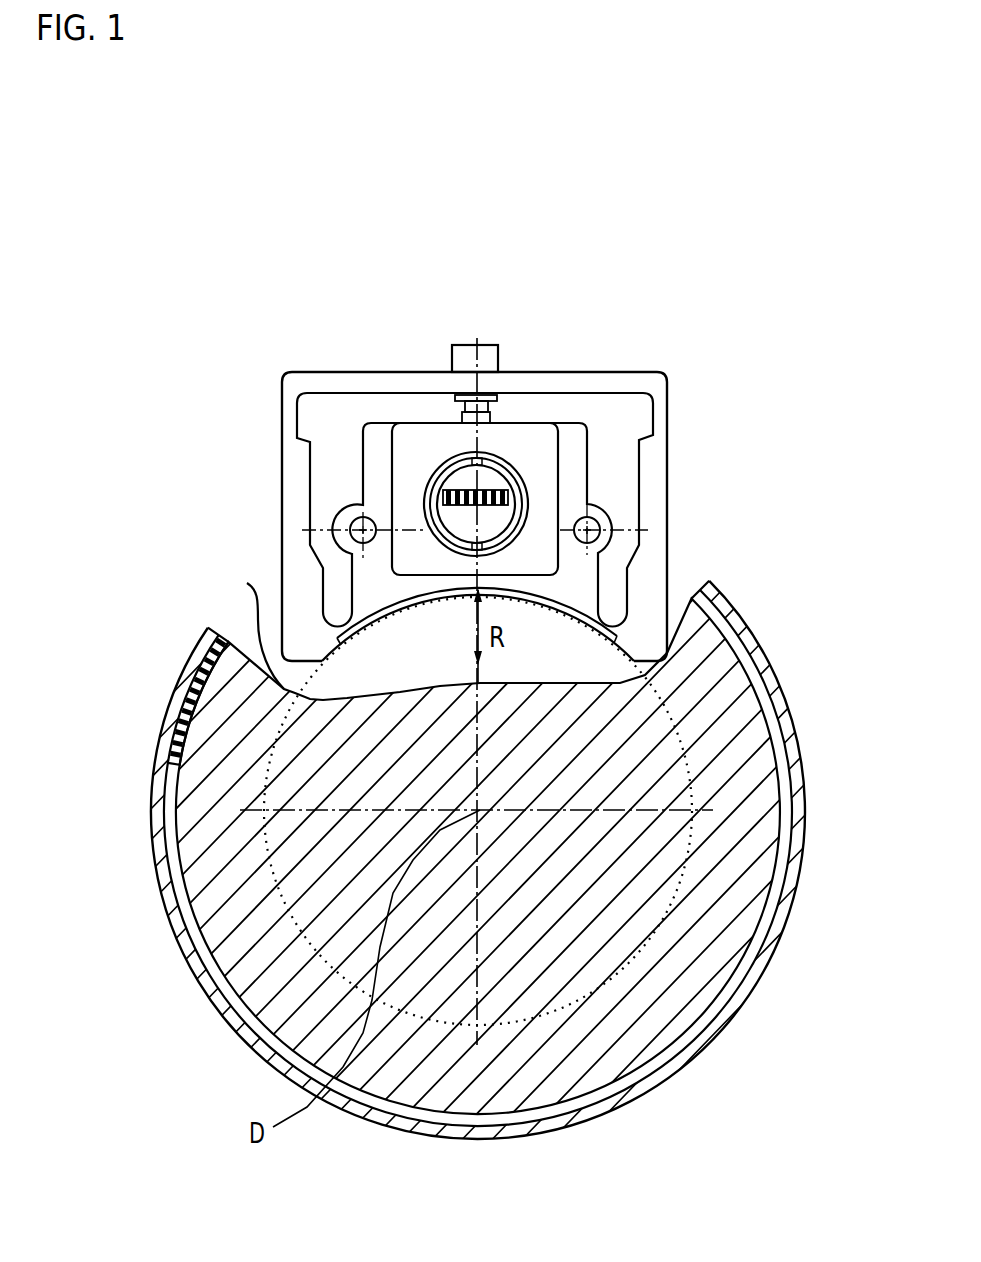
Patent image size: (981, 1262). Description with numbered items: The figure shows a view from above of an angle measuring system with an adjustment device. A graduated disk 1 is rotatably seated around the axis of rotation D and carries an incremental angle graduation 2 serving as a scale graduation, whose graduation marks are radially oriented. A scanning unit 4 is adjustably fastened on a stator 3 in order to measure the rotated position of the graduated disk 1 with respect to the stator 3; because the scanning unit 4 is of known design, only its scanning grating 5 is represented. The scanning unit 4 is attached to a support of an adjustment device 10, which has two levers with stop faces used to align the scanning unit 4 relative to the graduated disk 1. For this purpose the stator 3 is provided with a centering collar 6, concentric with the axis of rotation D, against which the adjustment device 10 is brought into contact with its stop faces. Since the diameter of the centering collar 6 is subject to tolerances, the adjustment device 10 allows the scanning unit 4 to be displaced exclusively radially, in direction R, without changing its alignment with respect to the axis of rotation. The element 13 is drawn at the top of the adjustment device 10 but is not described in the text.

The graduated disk 1 is at (607, 1062).
The incremental angle graduation 2 is at (167, 735).
The stator 3 is at (168, 885).
The scanning unit 4 is at (512, 440).
The scanning grating 5 is at (510, 487).
The centering collar 6 is at (247, 583).
The adjustment device 10 is at (689, 431).
The connector 13 is at (463, 352).